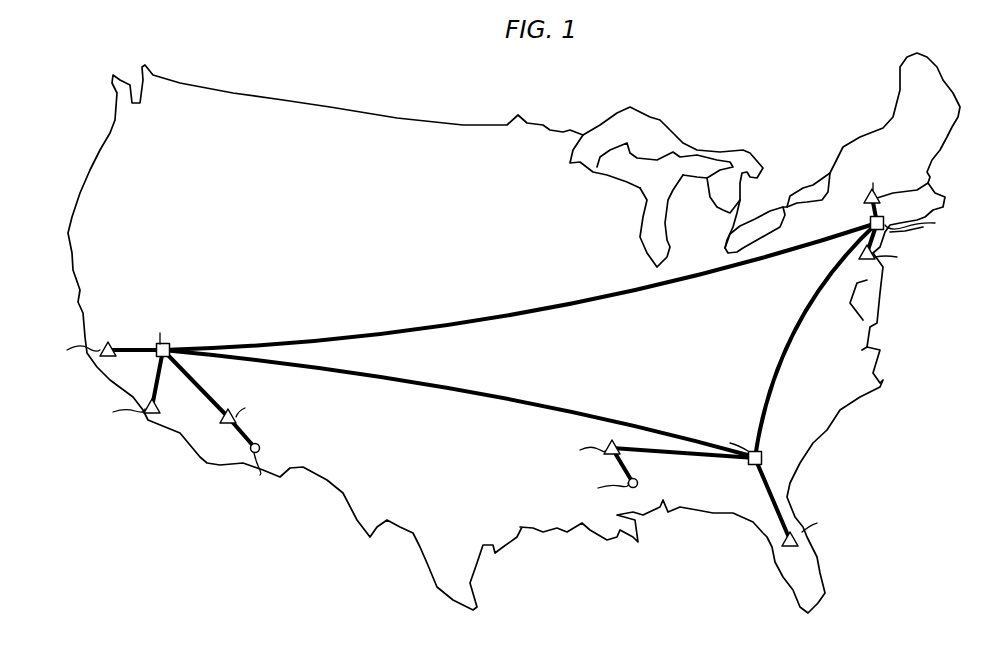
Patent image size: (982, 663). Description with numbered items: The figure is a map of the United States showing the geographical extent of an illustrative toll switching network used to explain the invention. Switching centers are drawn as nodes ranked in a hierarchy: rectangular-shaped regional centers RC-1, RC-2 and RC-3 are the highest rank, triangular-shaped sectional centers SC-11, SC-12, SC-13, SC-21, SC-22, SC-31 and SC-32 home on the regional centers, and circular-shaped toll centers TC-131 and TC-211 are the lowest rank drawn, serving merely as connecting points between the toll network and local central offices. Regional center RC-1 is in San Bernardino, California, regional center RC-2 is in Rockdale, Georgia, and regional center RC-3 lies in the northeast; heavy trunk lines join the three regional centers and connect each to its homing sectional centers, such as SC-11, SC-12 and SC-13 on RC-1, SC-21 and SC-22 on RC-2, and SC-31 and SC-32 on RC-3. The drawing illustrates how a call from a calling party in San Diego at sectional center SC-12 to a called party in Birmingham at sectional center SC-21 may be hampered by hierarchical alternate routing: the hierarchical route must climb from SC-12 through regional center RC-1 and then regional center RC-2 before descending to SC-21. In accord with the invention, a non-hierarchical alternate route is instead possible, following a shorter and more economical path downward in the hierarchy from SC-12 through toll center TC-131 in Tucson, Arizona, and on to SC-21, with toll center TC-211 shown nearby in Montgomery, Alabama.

The regional center RC-1 is at (171, 347).
The regional center RC-2 is at (762, 458).
The regional center RC-3 is at (870, 220).
The sectional center SC-11 is at (105, 345).
The sectional center SC-12 is at (152, 414).
The sectional center SC-13 is at (230, 410).
The sectional center SC-21 is at (619, 452).
The sectional center SC-22 is at (778, 536).
The sectional center SC-31 is at (880, 195).
The sectional center SC-32 is at (862, 260).
The toll center TC-131 is at (260, 448).
The toll center TC-211 is at (638, 483).